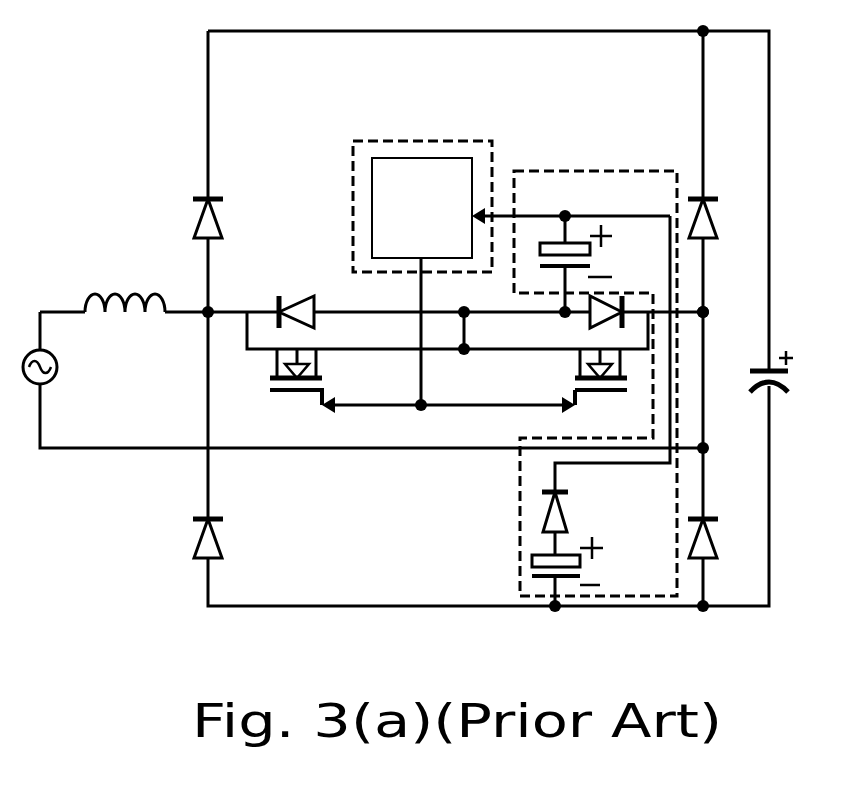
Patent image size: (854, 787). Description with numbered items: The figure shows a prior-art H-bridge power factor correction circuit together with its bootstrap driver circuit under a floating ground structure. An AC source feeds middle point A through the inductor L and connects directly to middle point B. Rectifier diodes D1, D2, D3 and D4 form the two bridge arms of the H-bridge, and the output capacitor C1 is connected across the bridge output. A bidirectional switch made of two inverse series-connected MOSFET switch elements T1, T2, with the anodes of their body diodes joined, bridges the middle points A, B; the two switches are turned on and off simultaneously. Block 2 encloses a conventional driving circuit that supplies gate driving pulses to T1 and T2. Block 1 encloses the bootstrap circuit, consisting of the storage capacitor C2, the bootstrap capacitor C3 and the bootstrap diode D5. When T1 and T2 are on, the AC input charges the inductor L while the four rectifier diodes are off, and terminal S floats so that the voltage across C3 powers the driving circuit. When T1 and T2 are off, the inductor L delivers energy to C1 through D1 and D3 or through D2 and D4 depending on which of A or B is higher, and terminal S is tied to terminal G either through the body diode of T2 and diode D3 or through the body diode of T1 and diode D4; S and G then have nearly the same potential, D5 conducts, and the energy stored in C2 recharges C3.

The block 1 is at (573, 172).
The block 2 is at (428, 141).
The inductor L is at (125, 288).
The middle point A is at (196, 296).
The middle point B is at (714, 301).
The terminal S is at (455, 330).
The terminal G is at (555, 628).
The rectifier diode D1 is at (226, 197).
The rectifier diode D2 is at (720, 197).
The rectifier diode D3 is at (721, 527).
The rectifier diode D4 is at (227, 522).
The bootstrap diode D5 is at (595, 507).
The output capacitor C1 is at (791, 363).
The storage capacitor C2 is at (586, 567).
The bootstrap capacitor C3 is at (595, 264).
The switch element T1 is at (296, 369).
The switch element T2 is at (601, 367).